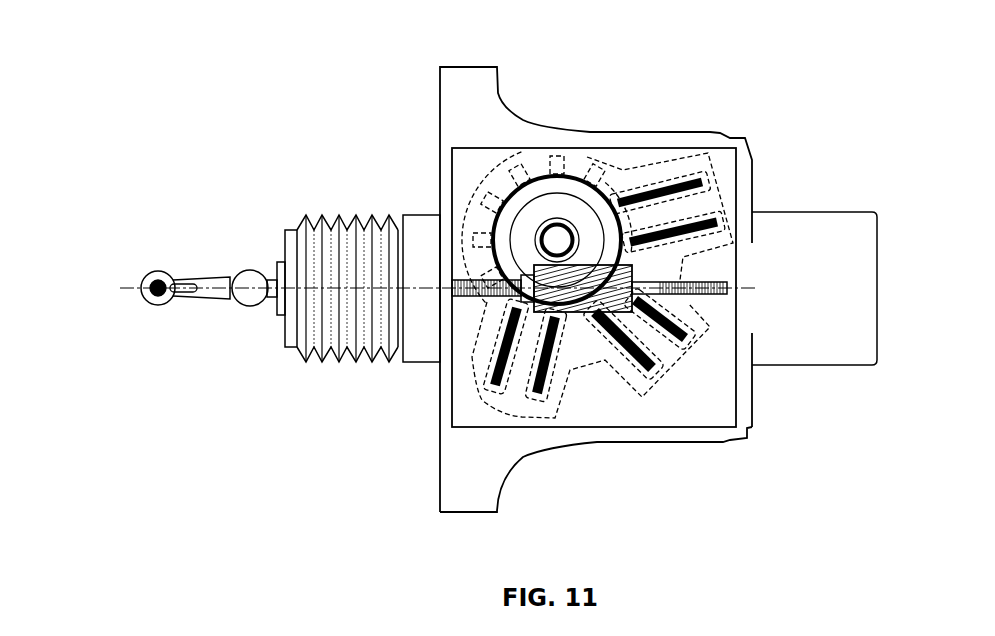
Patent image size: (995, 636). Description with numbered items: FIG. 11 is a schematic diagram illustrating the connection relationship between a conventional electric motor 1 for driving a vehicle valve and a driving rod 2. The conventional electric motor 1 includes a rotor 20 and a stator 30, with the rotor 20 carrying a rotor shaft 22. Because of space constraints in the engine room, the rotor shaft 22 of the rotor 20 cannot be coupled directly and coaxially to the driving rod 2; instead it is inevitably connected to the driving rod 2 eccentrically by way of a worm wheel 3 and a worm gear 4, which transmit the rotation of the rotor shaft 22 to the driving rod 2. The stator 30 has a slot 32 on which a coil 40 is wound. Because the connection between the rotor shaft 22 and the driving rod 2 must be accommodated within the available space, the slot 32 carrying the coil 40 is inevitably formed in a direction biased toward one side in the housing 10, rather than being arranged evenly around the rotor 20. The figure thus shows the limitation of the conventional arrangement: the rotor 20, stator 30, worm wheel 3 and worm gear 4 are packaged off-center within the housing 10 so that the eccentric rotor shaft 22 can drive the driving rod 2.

The electric motor 1 is at (723, 132).
The driving rod 2 is at (470, 293).
The worm wheel 3 is at (510, 178).
The worm gear 4 is at (573, 313).
The housing 10 is at (730, 443).
The rotor 20 is at (590, 180).
The rotor shaft 22 is at (557, 240).
The stator 30 is at (660, 387).
The slot 32 is at (660, 347).
The coil 40 is at (493, 382).